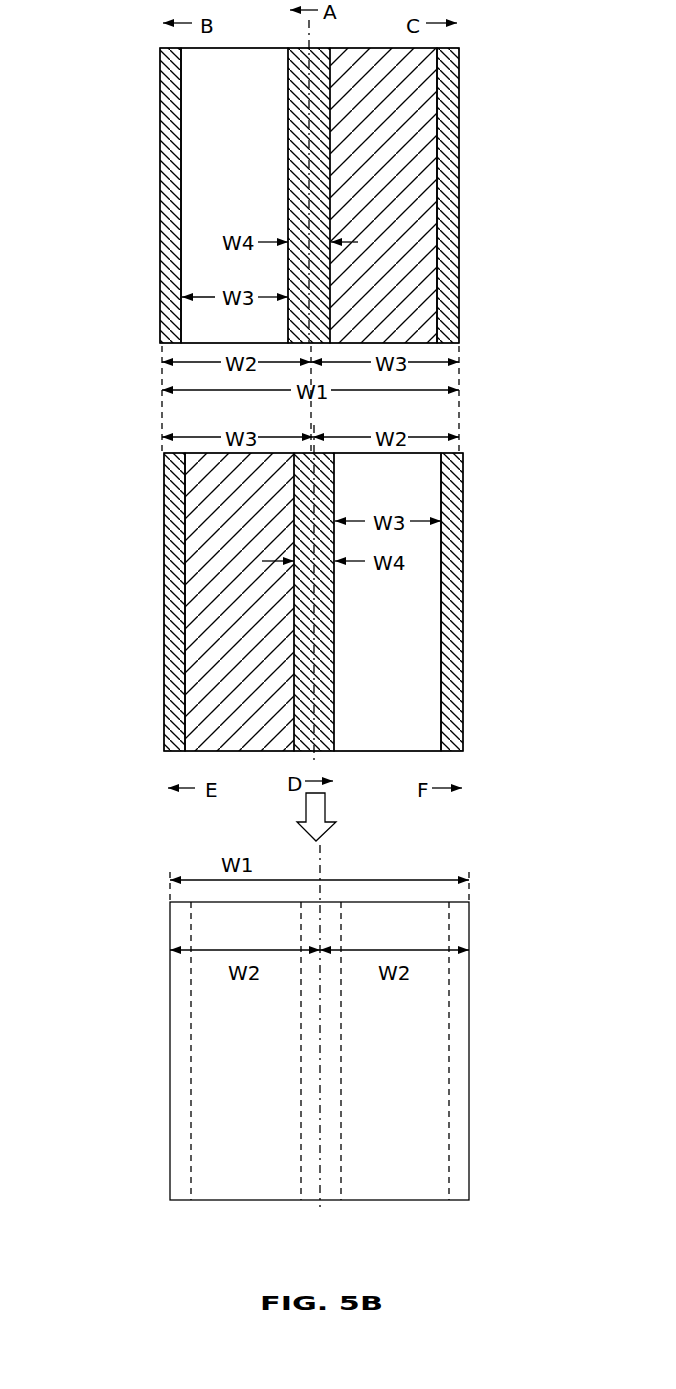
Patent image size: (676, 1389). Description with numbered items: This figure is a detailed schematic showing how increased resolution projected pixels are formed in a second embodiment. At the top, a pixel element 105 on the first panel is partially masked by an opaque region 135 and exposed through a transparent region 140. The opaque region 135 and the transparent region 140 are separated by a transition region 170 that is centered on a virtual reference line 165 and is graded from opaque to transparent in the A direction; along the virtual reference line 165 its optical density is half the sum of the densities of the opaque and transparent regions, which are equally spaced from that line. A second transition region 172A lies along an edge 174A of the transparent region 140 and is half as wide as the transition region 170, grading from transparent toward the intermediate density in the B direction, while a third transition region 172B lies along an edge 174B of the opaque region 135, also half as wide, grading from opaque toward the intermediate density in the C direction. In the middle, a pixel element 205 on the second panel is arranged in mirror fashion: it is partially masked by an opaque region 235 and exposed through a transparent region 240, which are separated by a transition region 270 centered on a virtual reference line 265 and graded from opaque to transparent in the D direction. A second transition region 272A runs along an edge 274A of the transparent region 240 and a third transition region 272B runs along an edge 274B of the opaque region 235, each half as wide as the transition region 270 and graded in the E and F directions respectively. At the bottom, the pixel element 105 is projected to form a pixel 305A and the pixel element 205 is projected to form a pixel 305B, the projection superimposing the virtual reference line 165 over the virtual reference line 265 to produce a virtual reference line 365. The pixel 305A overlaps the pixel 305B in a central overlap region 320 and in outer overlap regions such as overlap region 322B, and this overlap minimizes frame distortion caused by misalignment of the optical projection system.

The pixel element 105 is at (157, 140).
The transparent region 140 is at (205, 75).
The opaque region 135 is at (422, 70).
The transition region 170 is at (302, 52).
The virtual reference line 165 is at (312, 47).
The second transition region 172A is at (170, 242).
The edge 174A is at (160, 292).
The third transition region 172B is at (448, 238).
The edge 174B is at (460, 298).
The pixel element 205 is at (161, 605).
The opaque region 235 is at (205, 487).
The transparent region 240 is at (425, 482).
The virtual reference line 265 is at (313, 433).
The transition region 270 is at (323, 740).
The second transition region 272A is at (175, 678).
The edge 274A is at (164, 729).
The third transition region 272B is at (453, 656).
The edge 274B is at (463, 715).
The overlap region 320 is at (333, 1169).
The overlap region 322B is at (180, 1109).
The virtual reference line 365 is at (322, 892).
The pixel 305A is at (318, 1218).
The pixel 305B is at (468, 1218).